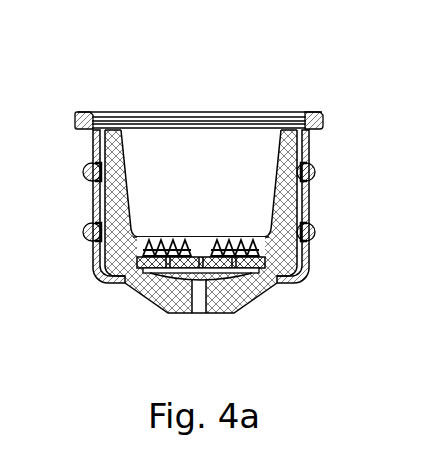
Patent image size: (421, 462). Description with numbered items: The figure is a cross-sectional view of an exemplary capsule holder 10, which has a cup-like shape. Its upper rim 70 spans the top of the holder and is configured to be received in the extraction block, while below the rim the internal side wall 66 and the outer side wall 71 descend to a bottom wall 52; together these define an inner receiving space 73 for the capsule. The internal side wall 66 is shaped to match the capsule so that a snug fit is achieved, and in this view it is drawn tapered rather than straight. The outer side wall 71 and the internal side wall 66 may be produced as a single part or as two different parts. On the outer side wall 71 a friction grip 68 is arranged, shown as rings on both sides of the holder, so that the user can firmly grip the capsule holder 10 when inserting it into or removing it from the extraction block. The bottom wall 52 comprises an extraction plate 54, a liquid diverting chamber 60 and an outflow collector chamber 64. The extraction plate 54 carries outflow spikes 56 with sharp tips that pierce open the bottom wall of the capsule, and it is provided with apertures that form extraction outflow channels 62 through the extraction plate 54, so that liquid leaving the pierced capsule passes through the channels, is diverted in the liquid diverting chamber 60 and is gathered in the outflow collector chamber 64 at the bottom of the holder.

The capsule holder 10 is at (331, 128).
The upper rim 70 is at (81, 111).
The outer side wall 71 is at (93, 143).
The inner receiving space 73 is at (176, 178).
The internal side wall 66 is at (262, 188).
The friction grip 68 is at (88, 232).
The bottom wall 52 is at (192, 236).
The outflow spikes 56 is at (250, 234).
The extraction plate 54 is at (255, 262).
The liquid diverting chamber 60 is at (210, 262).
The extraction outflow channels 62 is at (169, 263).
The outflow collector chamber 64 is at (198, 303).